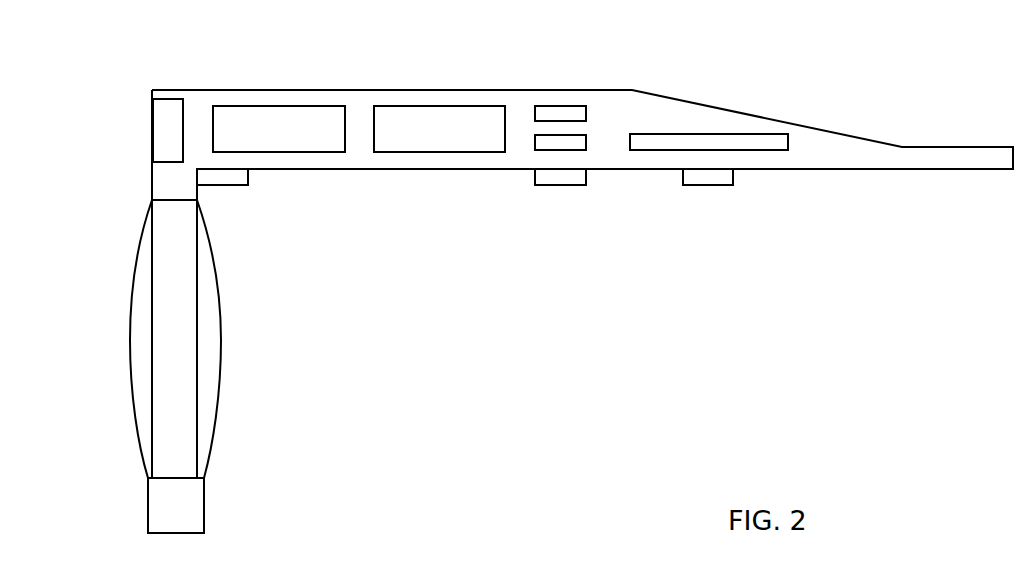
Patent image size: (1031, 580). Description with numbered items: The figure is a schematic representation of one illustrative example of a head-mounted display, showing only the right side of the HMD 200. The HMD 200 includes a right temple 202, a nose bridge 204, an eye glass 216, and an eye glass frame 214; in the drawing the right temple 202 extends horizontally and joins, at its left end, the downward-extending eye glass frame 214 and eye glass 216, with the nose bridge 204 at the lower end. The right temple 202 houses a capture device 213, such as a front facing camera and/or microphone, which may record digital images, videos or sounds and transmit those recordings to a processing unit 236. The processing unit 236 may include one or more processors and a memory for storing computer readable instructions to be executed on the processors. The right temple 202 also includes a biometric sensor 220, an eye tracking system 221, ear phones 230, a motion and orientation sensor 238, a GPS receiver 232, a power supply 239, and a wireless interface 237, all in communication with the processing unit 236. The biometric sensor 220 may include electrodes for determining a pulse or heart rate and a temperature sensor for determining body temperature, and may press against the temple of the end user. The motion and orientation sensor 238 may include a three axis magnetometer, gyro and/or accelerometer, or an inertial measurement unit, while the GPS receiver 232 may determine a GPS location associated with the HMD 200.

The HMD 200 is at (518, 409).
The right temple 202 is at (193, 101).
The nose bridge 204 is at (193, 506).
The capture device 213 is at (167, 122).
The eye glass frame 214 is at (158, 232).
The eye glass 216 is at (140, 300).
The biometric sensor 220 is at (570, 186).
The eye tracking system 221 is at (230, 186).
The ear phones 230 is at (715, 186).
The GPS receiver 232 is at (588, 140).
The processing unit 236 is at (287, 117).
The wireless interface 237 is at (458, 120).
The motion and orientation sensor 238 is at (575, 104).
The power supply 239 is at (720, 133).